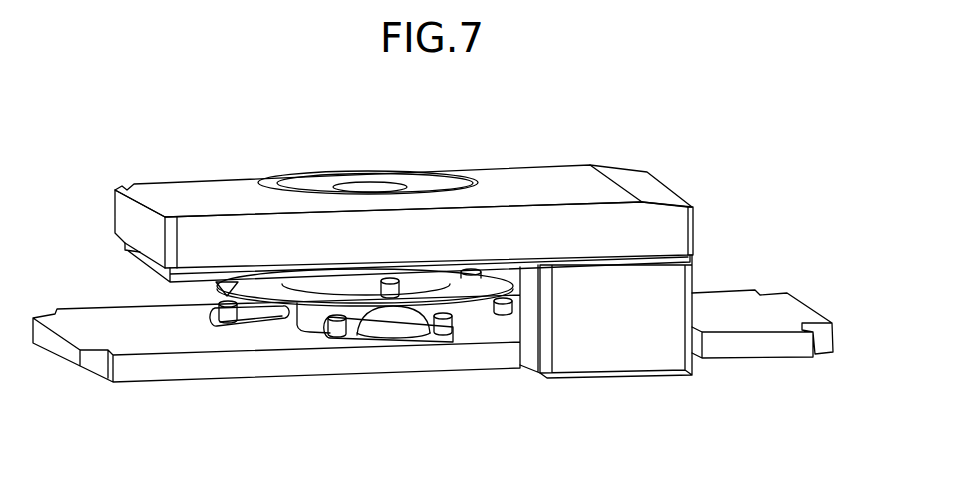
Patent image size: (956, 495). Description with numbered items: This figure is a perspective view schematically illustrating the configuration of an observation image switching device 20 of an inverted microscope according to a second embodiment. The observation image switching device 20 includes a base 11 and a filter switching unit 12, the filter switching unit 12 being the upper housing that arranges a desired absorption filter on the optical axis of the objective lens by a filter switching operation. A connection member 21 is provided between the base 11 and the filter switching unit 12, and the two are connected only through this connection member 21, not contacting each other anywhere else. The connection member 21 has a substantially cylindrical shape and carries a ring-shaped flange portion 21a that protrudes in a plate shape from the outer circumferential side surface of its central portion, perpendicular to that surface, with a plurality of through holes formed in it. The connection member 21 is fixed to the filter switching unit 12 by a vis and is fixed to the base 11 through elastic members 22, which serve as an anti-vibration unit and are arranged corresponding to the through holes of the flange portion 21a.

The base 11 is at (128, 368).
The filter switching unit 12 is at (214, 186).
The observation image switching device 20 is at (506, 156).
The connection member 21 is at (317, 318).
The flange portion 21a is at (260, 297).
The elastic members 22 is at (380, 343).